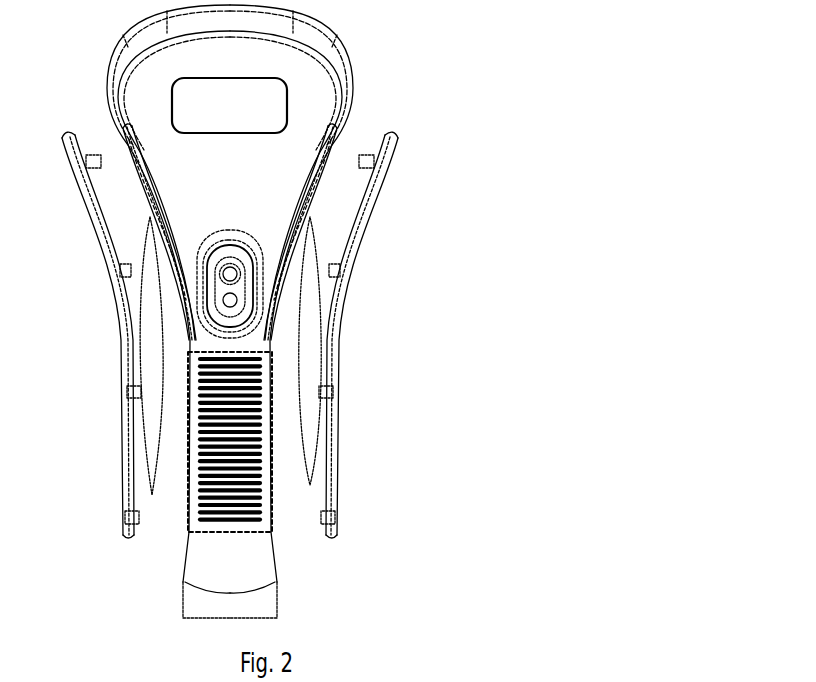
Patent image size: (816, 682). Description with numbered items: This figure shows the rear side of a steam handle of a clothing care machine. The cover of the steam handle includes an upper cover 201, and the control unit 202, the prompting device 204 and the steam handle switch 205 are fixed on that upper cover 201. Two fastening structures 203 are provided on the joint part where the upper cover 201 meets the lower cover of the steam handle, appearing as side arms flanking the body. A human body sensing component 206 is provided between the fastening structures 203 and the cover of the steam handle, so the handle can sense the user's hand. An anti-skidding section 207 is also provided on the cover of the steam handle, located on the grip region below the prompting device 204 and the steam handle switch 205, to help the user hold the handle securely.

The upper cover 201 is at (230, 56).
The control unit 202 is at (288, 101).
The fastening structure 203 is at (378, 207).
The prompting device 204 is at (237, 274).
The steam handle switch 205 is at (237, 300).
The human body sensing component 206 is at (313, 343).
The anti-skidding section 207 is at (272, 448).